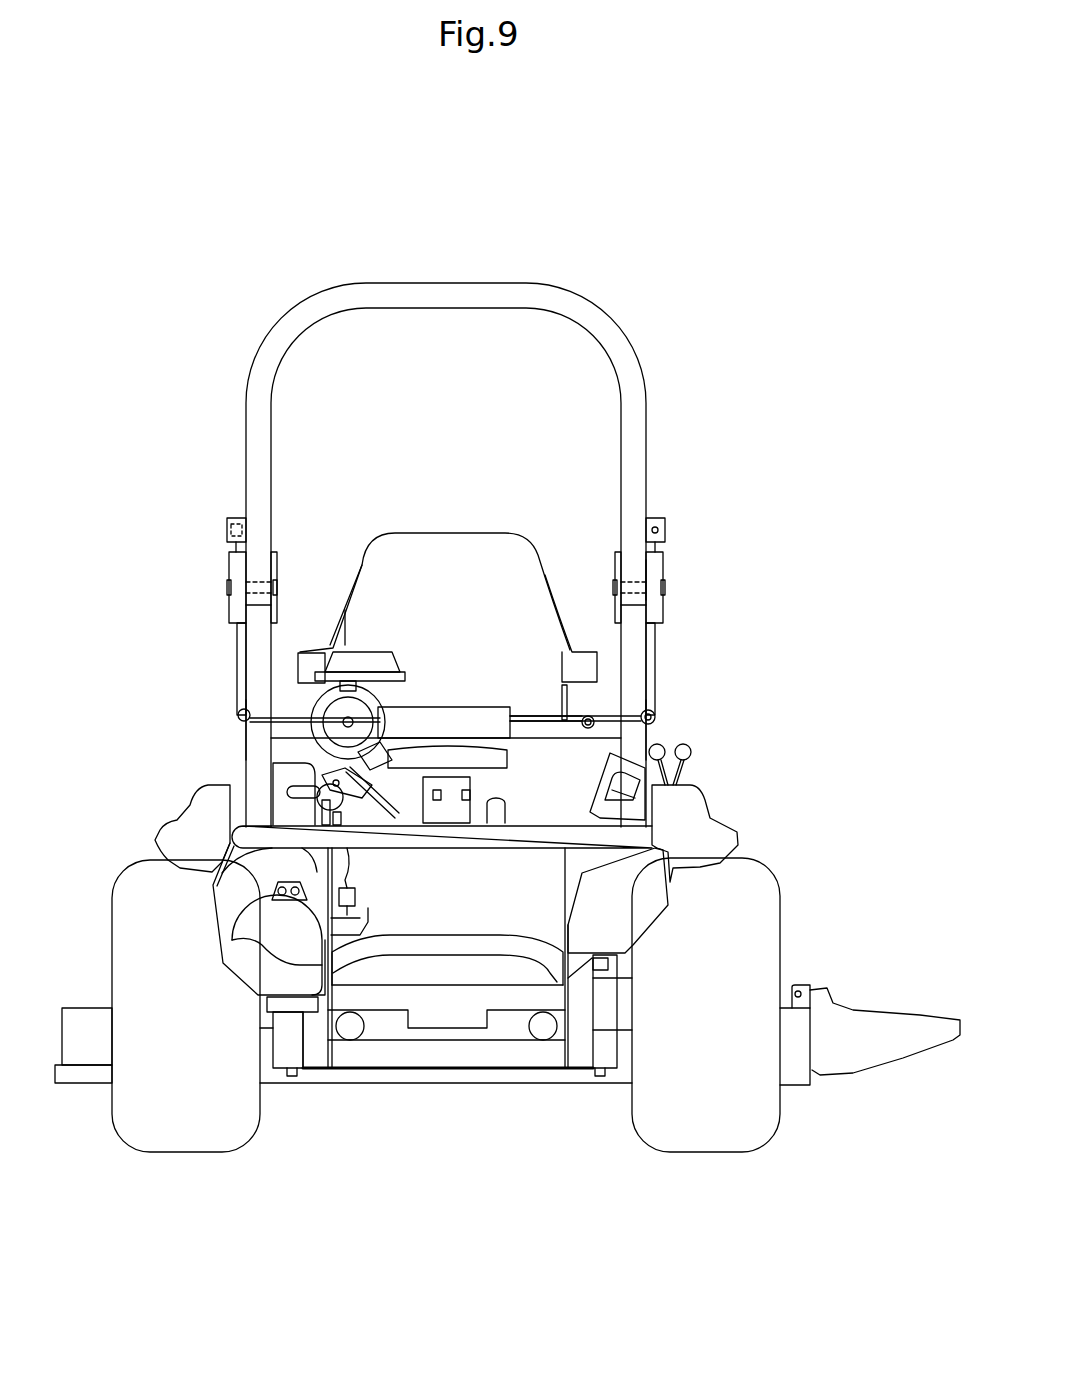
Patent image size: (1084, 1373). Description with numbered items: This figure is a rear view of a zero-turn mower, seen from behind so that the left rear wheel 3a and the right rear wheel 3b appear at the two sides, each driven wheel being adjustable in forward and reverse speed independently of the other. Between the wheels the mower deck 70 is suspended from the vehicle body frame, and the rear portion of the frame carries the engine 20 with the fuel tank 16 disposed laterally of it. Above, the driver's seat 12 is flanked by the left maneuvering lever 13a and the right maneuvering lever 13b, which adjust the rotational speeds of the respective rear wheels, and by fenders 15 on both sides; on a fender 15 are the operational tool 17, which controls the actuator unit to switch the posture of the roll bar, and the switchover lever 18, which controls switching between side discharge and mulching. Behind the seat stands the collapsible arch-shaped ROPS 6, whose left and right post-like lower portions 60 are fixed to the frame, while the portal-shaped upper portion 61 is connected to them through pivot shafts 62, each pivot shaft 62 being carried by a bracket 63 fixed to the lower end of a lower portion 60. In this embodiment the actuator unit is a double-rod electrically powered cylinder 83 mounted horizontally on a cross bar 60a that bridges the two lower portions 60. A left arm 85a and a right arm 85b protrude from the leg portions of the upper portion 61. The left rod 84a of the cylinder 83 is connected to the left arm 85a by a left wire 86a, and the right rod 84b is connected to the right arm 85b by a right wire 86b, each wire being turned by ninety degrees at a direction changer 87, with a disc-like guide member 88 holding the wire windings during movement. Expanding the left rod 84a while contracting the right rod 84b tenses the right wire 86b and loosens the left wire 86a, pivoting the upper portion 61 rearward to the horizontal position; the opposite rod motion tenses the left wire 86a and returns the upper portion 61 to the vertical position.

The upper portion 61 is at (443, 300).
The ROPS 6 is at (652, 449).
The driver's seat 12 is at (441, 548).
The left maneuvering lever 13a is at (330, 640).
The right maneuvering lever 13b is at (570, 650).
The bracket 63 is at (277, 568).
The left arm 85a is at (227, 530).
The right arm 85b is at (665, 530).
The guide member 88 is at (229, 565).
The pivot shaft 62 is at (227, 590).
The left wire 86a is at (237, 660).
The right wire 86b is at (655, 660).
The lower portion 60 is at (262, 686).
The direction changer 87 is at (240, 722).
The left rod 84a is at (352, 712).
The electrically powered cylinder 83 is at (440, 725).
The right rod 84b is at (533, 718).
The engine 20 is at (480, 757).
The cross bar 60a is at (398, 742).
The fender 15 is at (185, 840).
The operational tool 17 is at (692, 753).
The switchover lever 18 is at (658, 748).
The fuel tank 16 is at (560, 885).
The mower deck 70 is at (90, 1084).
The left rear wheel 3a is at (185, 1135).
The right rear wheel 3b is at (705, 1137).